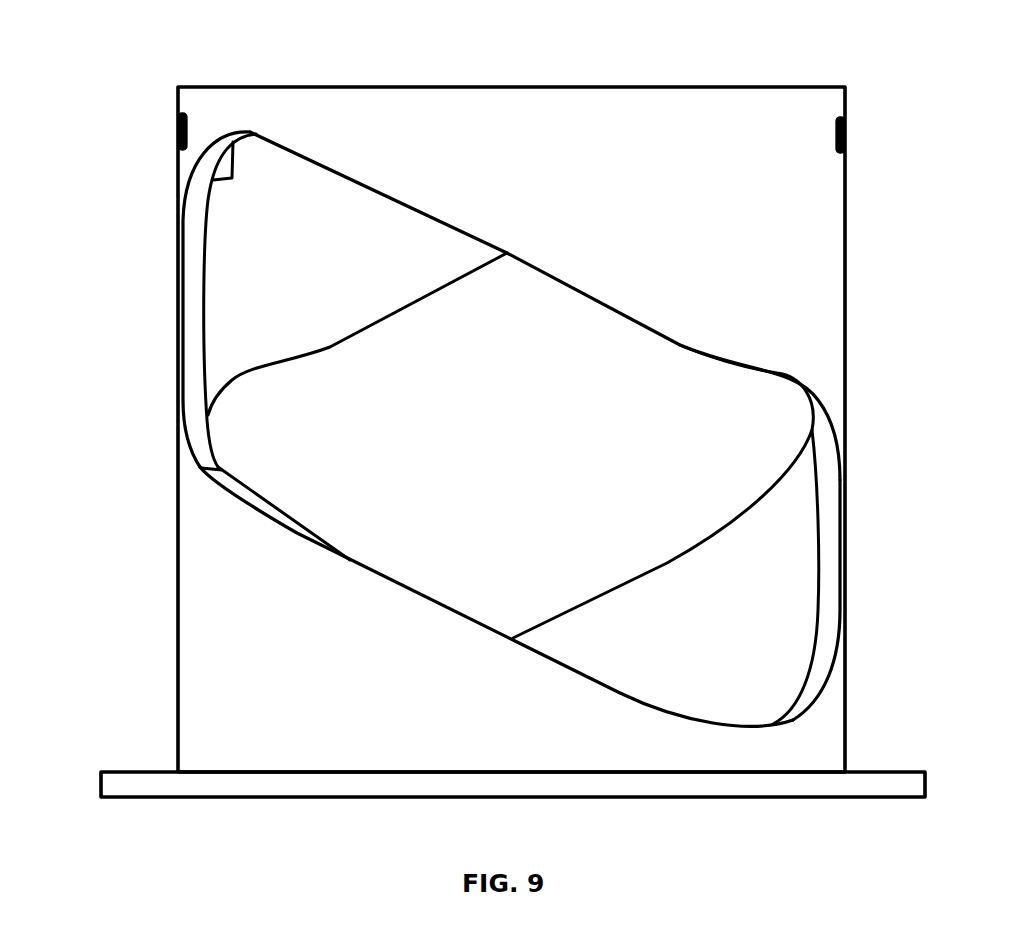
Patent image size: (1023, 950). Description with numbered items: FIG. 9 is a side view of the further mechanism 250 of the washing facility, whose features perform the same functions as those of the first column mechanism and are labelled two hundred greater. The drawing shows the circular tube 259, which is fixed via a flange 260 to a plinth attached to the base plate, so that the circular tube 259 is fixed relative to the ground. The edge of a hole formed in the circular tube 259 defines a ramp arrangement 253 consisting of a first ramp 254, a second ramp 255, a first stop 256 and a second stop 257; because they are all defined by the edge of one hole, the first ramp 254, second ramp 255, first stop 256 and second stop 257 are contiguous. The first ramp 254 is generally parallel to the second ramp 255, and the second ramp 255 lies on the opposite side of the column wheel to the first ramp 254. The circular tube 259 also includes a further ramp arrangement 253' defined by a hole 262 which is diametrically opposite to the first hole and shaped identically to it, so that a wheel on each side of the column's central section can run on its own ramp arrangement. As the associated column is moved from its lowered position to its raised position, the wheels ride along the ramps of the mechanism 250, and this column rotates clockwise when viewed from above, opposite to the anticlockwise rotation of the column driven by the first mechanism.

The further mechanism 250 is at (141, 63).
The circular tube 259 is at (780, 112).
The flange 260 is at (897, 782).
The second stop 257 is at (192, 272).
The hole 262 is at (397, 312).
The second ramp 255 is at (555, 278).
The first ramp 254 is at (303, 533).
The ramp arrangement 253 is at (496, 596).
The further ramp arrangement 253' is at (663, 491).
The first stop 256 is at (827, 623).